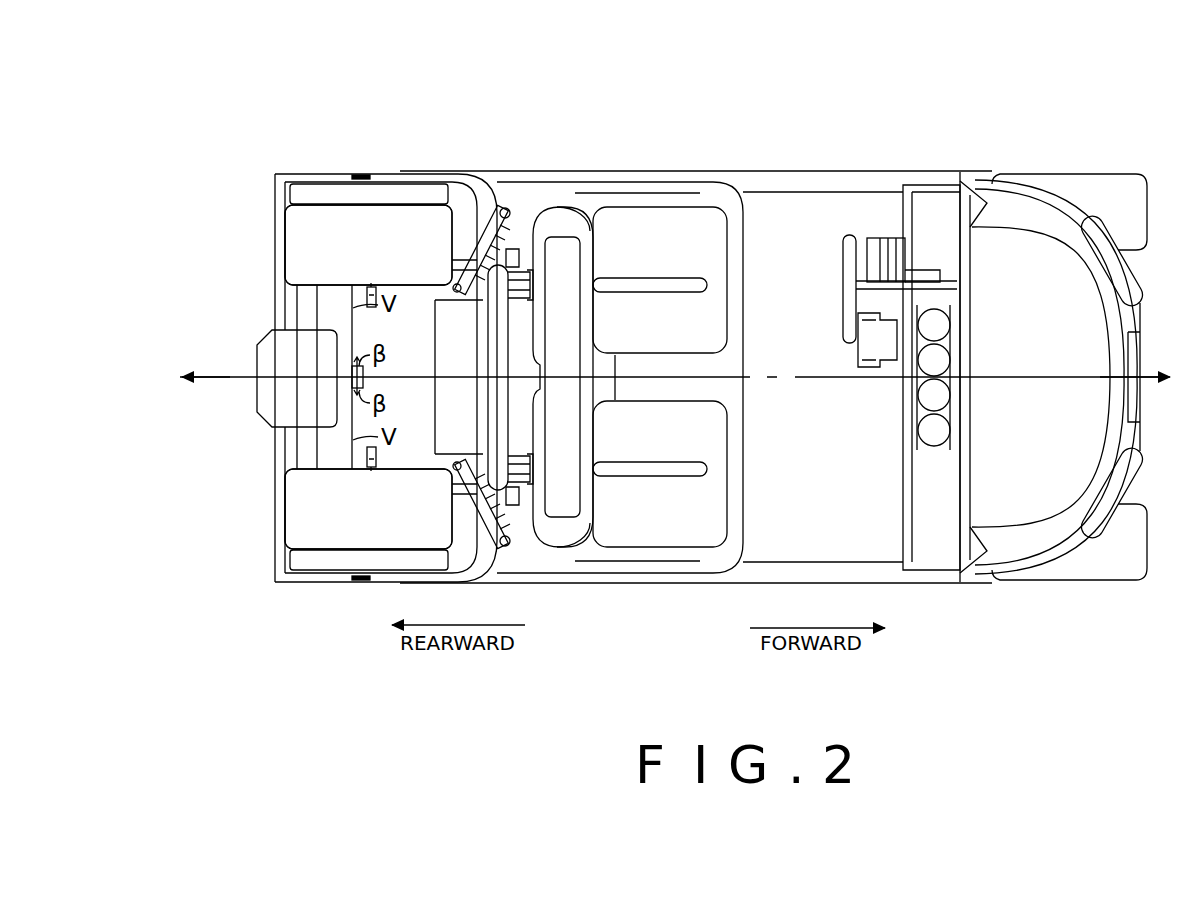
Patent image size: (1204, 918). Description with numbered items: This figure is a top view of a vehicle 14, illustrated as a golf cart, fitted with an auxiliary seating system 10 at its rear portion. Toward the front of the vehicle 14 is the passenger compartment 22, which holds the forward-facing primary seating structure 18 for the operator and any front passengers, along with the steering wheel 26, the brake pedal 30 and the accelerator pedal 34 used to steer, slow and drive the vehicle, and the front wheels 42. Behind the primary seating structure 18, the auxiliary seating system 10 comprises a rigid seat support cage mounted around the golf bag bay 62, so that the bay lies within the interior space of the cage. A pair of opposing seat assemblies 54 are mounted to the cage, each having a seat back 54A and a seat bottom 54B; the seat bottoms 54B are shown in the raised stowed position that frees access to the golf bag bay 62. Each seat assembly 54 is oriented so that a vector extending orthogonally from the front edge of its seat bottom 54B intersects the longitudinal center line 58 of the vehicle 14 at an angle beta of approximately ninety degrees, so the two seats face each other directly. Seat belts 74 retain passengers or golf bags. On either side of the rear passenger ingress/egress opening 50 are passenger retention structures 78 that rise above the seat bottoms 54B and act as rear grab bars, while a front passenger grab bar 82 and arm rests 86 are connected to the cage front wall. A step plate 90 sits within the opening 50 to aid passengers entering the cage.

The auxiliary seating system 10 is at (243, 136).
The vehicle 14 is at (723, 127).
The primary seating structure 18 is at (630, 210).
The passenger compartment 22 is at (767, 222).
The steering wheel 26 is at (845, 264).
The brake pedal 30 is at (878, 252).
The accelerator pedal 34 is at (890, 362).
The front wheels 42 is at (1116, 205).
The passenger ingress/egress opening 50 is at (264, 352).
The seat assembly 54 is at (316, 163).
The seat back 54A is at (380, 183).
The seat bottom 54B is at (413, 232).
The longitudinal center line 58 is at (208, 381).
The golf bag bay 62 is at (428, 368).
The seat belt 74 is at (537, 225).
The passenger retention structure 78 is at (285, 230).
The front passenger grab bar 82 is at (463, 330).
The arm rest 86 is at (495, 427).
The step plate 90 is at (272, 406).